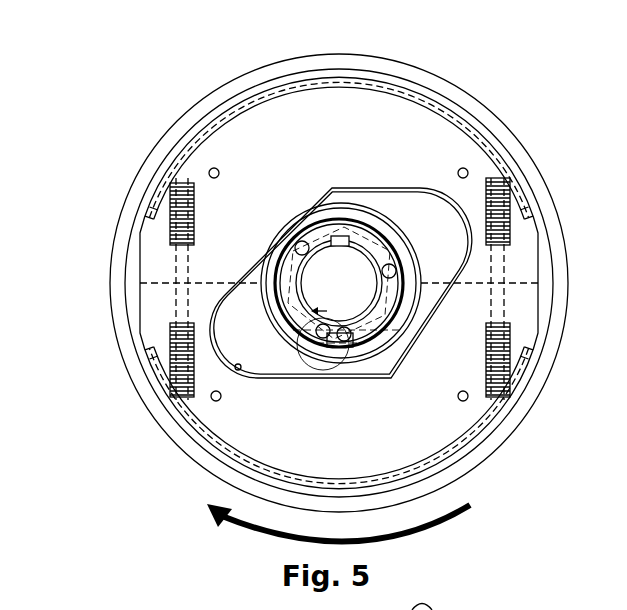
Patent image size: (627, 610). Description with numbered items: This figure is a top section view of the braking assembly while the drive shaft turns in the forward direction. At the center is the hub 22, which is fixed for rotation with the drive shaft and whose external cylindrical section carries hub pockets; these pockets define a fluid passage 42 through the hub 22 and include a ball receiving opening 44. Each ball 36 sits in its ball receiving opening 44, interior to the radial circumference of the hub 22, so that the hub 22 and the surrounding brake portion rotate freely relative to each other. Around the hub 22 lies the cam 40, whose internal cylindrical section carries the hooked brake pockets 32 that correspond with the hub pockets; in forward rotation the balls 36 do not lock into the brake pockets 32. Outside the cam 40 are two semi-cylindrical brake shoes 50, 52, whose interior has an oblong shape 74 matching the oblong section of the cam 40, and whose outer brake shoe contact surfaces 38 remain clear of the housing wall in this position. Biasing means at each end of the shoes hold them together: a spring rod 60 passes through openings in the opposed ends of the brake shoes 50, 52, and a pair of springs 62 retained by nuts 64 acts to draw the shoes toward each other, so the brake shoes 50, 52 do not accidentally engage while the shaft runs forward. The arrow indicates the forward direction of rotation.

The hub 22 is at (392, 323).
The brake pocket 32 is at (377, 312).
The ball 36 is at (318, 245).
The brake shoe contact surface 38 is at (205, 108).
The cam 40 is at (410, 187).
The fluid passage 42 is at (372, 233).
The ball receiving opening 44 is at (472, 609).
The brake shoe 50 is at (547, 262).
The brake shoe 52 is at (141, 317).
The spring rod 60 is at (506, 302).
The spring 62 is at (177, 196).
The nut 64 is at (486, 174).
The oblong shape of the brake shoes 74 is at (237, 369).